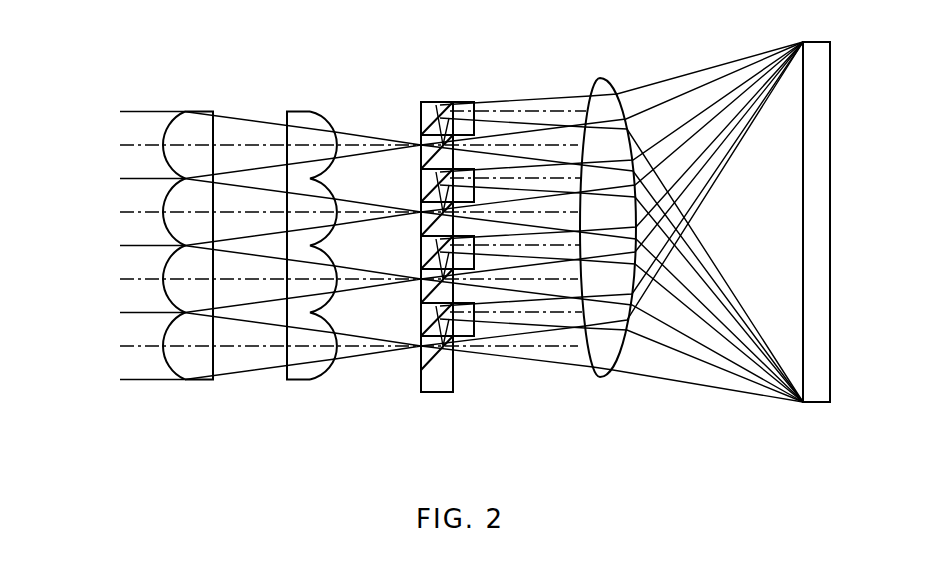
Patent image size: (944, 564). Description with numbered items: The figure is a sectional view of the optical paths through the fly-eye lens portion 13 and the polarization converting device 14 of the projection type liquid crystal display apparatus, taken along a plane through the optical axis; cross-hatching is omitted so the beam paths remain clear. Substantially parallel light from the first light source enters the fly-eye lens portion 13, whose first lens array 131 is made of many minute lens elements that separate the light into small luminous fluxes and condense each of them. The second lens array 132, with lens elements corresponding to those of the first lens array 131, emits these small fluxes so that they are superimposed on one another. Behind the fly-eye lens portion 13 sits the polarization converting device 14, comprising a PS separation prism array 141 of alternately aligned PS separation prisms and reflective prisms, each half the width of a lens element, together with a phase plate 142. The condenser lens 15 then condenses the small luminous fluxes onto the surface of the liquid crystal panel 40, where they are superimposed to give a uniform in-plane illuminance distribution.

The fly-eye lens portion 13 is at (253, 293).
The first lens array 131 is at (186, 372).
The second lens array 132 is at (320, 269).
The polarization converting device 14 is at (430, 200).
The PS separation prism array 141 is at (433, 99).
The phase plate 142 is at (463, 194).
The condenser lens 15 is at (598, 370).
The liquid crystal panel 40 is at (817, 402).